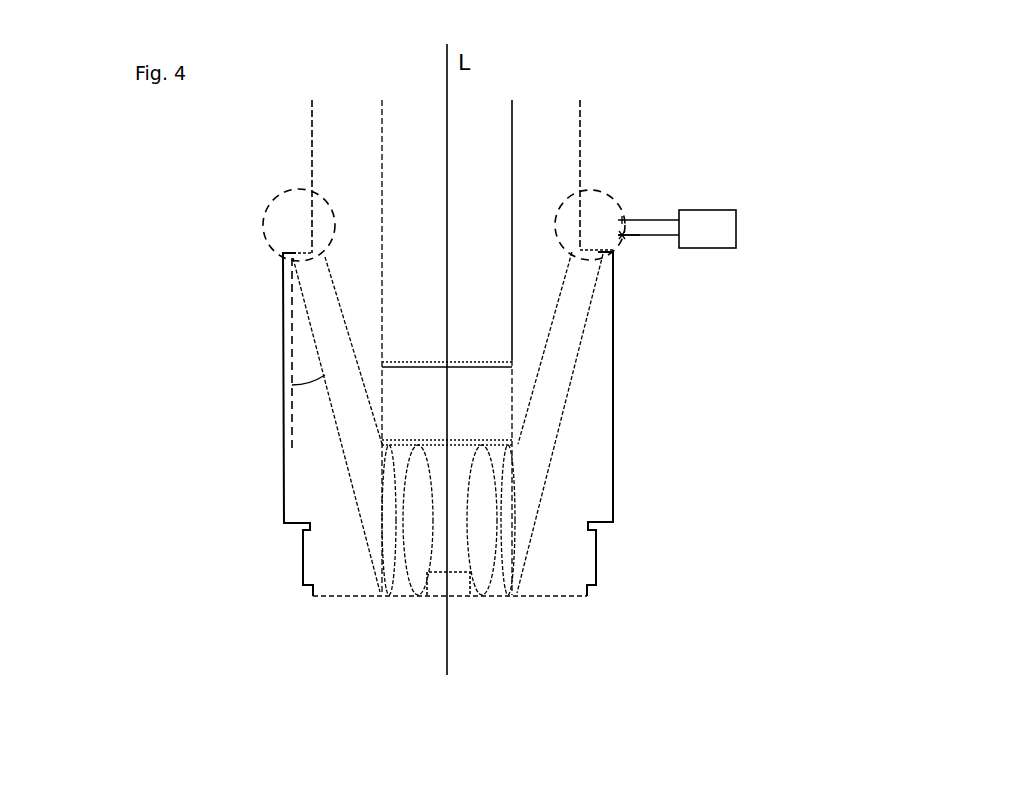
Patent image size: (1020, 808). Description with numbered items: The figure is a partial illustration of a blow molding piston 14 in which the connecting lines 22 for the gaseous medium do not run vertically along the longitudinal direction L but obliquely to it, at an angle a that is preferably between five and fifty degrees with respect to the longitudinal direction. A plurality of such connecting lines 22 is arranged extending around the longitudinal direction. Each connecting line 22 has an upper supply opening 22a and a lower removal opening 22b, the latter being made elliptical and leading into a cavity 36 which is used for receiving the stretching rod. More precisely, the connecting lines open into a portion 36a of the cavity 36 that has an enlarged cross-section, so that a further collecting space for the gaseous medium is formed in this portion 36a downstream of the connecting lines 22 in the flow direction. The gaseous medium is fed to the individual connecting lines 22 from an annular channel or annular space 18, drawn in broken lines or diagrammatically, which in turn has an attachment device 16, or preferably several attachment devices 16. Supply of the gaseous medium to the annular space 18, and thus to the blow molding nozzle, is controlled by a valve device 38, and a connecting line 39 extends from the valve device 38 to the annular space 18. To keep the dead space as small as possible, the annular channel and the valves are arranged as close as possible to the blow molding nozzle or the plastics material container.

The blow molding piston 14 is at (240, 342).
The attachment device 16 is at (625, 235).
The annular space 18 is at (610, 195).
The connecting line 22 is at (355, 463).
The upper supply opening 22a is at (313, 253).
The removal opening 22b is at (485, 530).
The cavity 36 is at (480, 127).
The portion of the cavity with enlarged cross-section 36a is at (435, 555).
The valve device 38 is at (715, 222).
The connecting line 39 is at (660, 228).